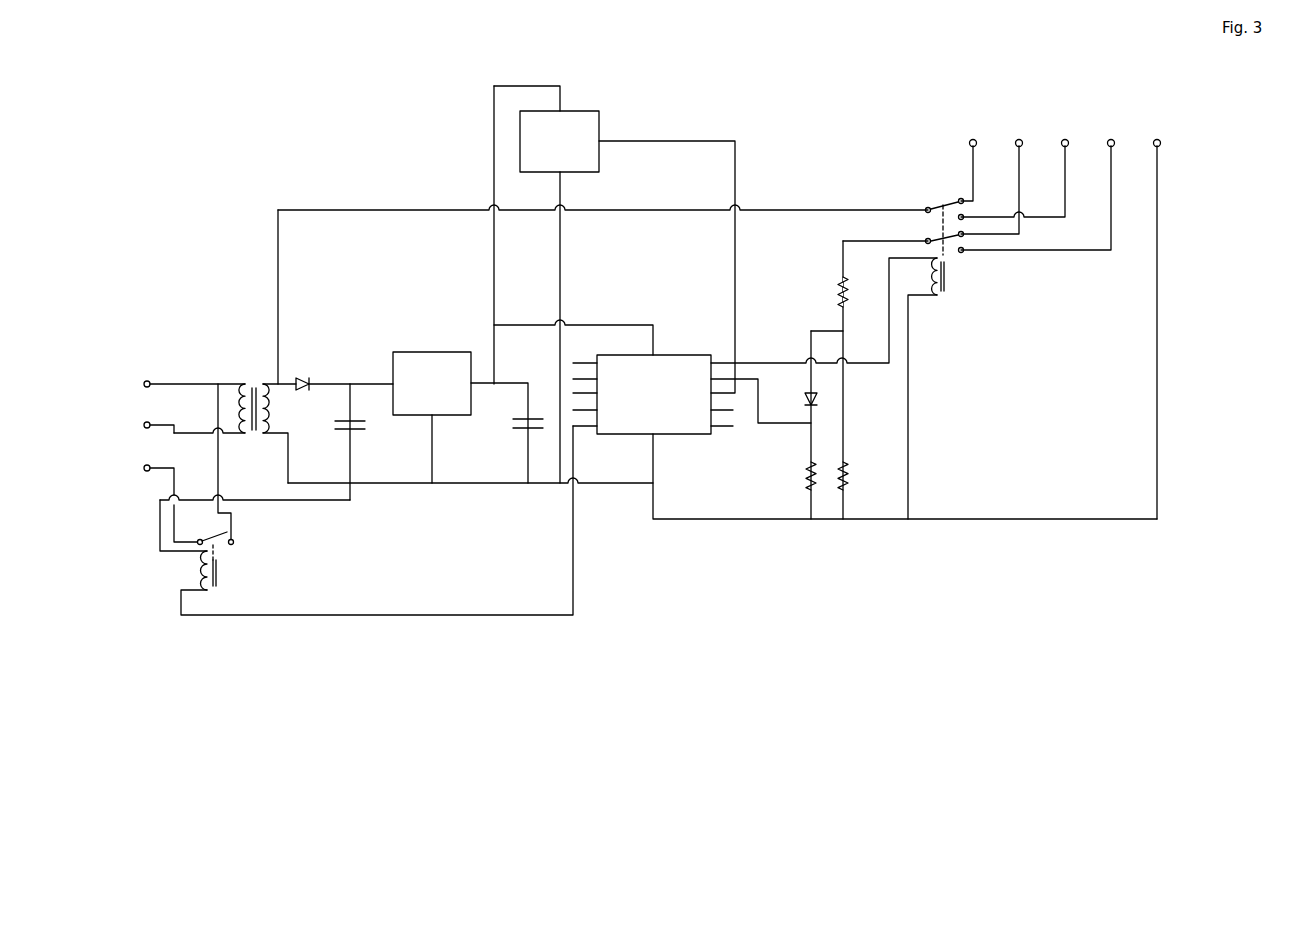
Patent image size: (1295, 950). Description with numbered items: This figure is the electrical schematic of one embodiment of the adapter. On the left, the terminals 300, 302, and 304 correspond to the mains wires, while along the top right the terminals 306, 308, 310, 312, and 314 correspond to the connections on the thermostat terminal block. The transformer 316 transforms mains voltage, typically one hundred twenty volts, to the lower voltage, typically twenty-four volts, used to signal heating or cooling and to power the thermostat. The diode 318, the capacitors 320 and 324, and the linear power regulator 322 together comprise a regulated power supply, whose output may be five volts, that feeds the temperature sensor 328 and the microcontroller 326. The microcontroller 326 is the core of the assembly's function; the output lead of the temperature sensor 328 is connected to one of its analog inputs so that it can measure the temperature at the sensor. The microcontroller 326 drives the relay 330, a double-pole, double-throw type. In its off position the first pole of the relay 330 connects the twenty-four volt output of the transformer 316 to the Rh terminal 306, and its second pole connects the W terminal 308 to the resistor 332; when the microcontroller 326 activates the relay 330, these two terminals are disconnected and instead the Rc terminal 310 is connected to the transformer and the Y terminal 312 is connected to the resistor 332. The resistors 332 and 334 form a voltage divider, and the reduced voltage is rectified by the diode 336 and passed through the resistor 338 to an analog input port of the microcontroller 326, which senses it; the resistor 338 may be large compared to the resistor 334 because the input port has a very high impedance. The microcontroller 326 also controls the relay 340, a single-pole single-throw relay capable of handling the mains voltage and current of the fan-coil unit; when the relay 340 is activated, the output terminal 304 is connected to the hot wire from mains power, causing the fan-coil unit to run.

The terminal 300 is at (176, 394).
The terminal 302 is at (141, 435).
The output terminal 304 is at (152, 502).
The Rh terminal 306 is at (983, 162).
The W terminal 308 is at (1006, 178).
The Rc terminal 310 is at (1029, 170).
The Y terminal 312 is at (1052, 186).
The C terminal 314 is at (1170, 321).
The transformer 316 is at (253, 419).
The diode 318 is at (303, 395).
The capacitor 320 is at (367, 429).
The linear power regulator 322 is at (432, 383).
The capacitor 324 is at (519, 433).
The microcontroller 326 is at (654, 395).
The temperature sensor 328 is at (559, 141).
The relay 330 is at (955, 276).
The resistor 332 is at (860, 292).
The resistor 334 is at (861, 476).
The diode 336 is at (795, 400).
The resistor 338 is at (790, 476).
The relay 340 is at (223, 562).